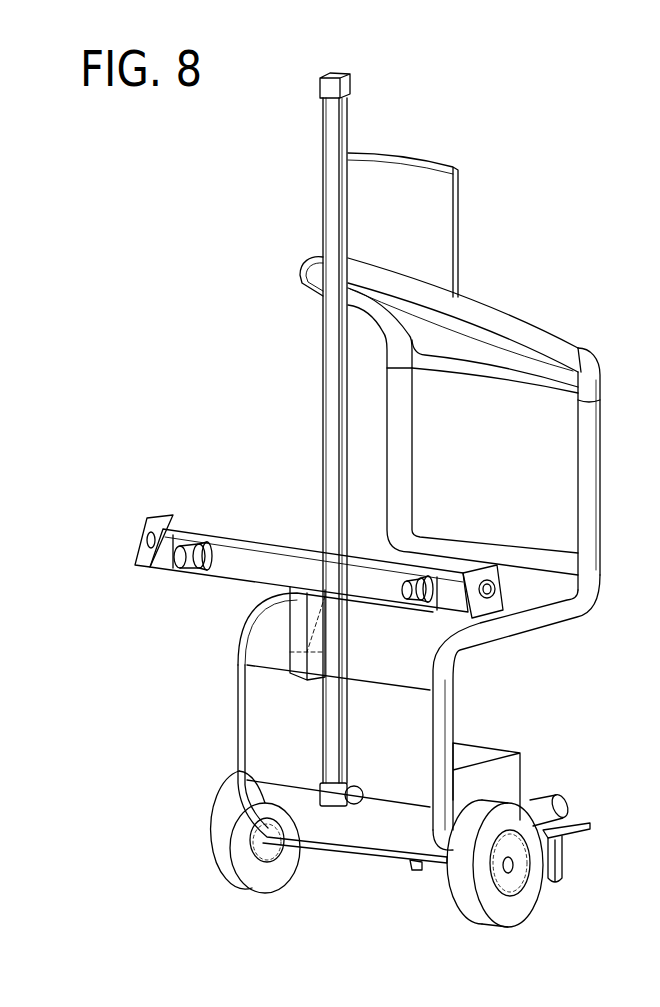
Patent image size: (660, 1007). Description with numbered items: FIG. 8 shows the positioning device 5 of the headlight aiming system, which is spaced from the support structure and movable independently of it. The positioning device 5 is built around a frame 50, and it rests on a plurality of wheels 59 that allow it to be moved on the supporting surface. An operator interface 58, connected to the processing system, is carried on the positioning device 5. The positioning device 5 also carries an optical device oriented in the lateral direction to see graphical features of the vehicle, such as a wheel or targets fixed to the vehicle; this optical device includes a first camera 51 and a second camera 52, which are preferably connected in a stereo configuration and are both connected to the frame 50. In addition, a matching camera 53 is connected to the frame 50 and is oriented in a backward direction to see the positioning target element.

The positioning device 5 is at (224, 251).
The frame 50 is at (297, 573).
The first camera 51 is at (176, 571).
The second camera 52 is at (412, 598).
The matching camera 53 is at (143, 536).
The operator interface 58 is at (433, 217).
The wheels 59 is at (522, 905).